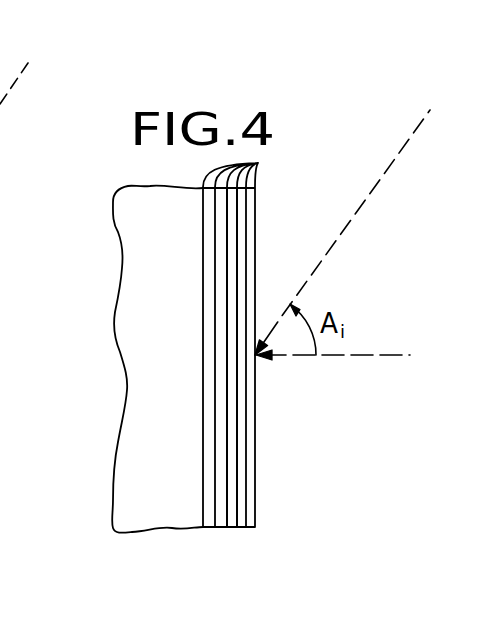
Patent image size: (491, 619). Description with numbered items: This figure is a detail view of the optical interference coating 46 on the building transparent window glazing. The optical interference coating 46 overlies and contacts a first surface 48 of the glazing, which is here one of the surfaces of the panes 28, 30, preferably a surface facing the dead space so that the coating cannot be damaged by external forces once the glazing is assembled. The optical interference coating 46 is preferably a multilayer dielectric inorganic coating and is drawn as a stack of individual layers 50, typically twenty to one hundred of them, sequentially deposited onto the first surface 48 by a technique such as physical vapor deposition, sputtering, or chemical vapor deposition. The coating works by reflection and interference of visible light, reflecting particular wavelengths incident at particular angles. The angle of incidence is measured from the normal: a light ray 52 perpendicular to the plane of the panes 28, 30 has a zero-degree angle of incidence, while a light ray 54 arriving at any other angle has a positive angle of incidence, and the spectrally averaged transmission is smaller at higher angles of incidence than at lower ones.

The pane 28 is at (120, 359).
The pane 30 is at (157, 268).
The optical interference coating 46 is at (260, 385).
The first surface 48 is at (205, 462).
The individual layers 50 is at (258, 163).
The light ray 52 is at (333, 357).
The light ray 54 is at (309, 279).